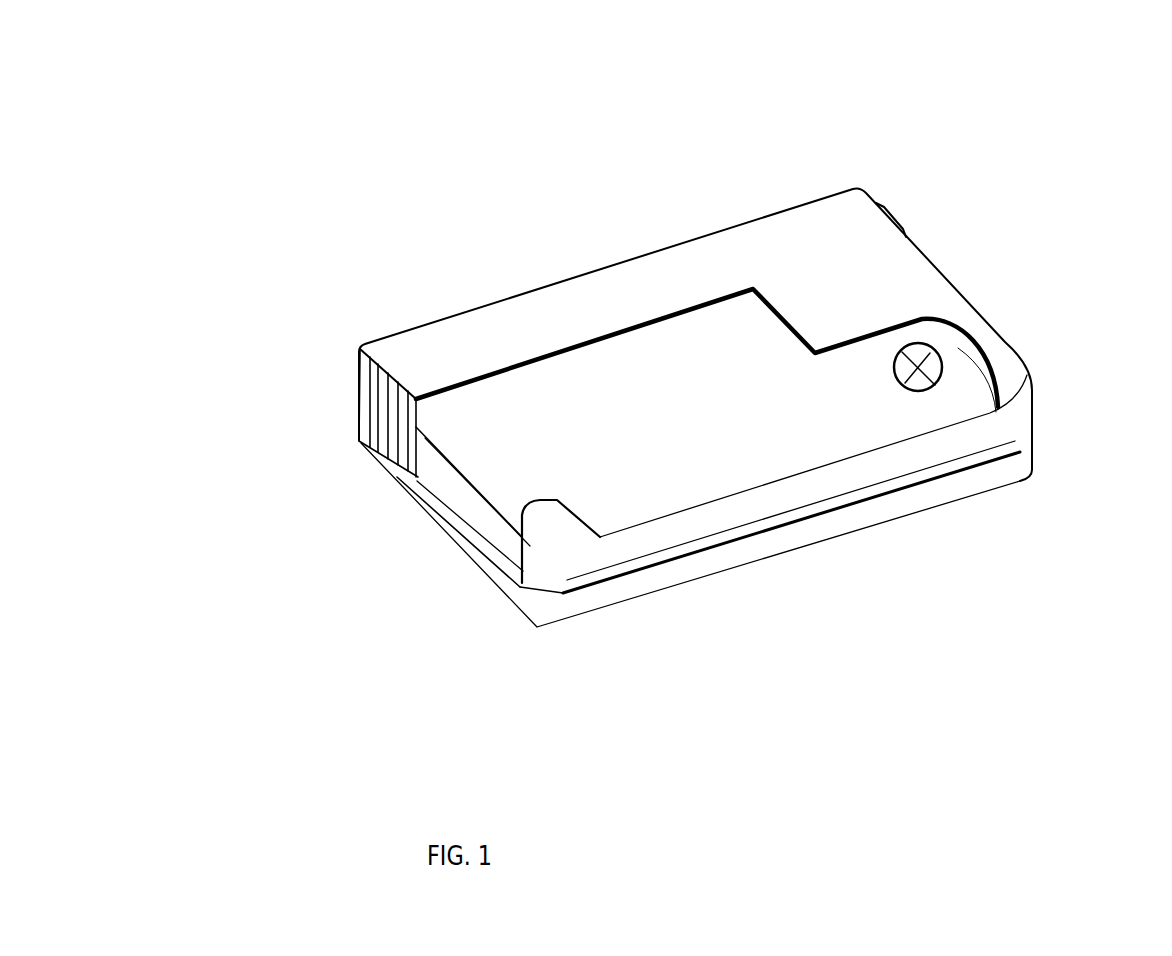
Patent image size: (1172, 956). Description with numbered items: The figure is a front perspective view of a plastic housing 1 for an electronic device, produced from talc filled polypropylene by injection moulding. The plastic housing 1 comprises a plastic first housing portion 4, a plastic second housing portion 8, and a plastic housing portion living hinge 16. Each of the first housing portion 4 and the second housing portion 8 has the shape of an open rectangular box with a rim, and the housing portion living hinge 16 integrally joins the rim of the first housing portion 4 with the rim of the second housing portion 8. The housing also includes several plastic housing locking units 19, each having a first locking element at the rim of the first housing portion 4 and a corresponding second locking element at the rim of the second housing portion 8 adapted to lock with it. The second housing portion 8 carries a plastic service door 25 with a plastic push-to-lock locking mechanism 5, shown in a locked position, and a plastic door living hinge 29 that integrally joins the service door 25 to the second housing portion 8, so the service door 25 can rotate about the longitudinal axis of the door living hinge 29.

The plastic housing 1 is at (833, 118).
The first housing portion 4 is at (670, 588).
The push-to-lock locking mechanism 5 is at (935, 366).
The second housing portion 8 is at (490, 330).
The housing portion living hinge 16 is at (717, 543).
The housing locking unit 19 is at (362, 407).
The service door 25 is at (775, 440).
The door living hinge 29 is at (490, 503).